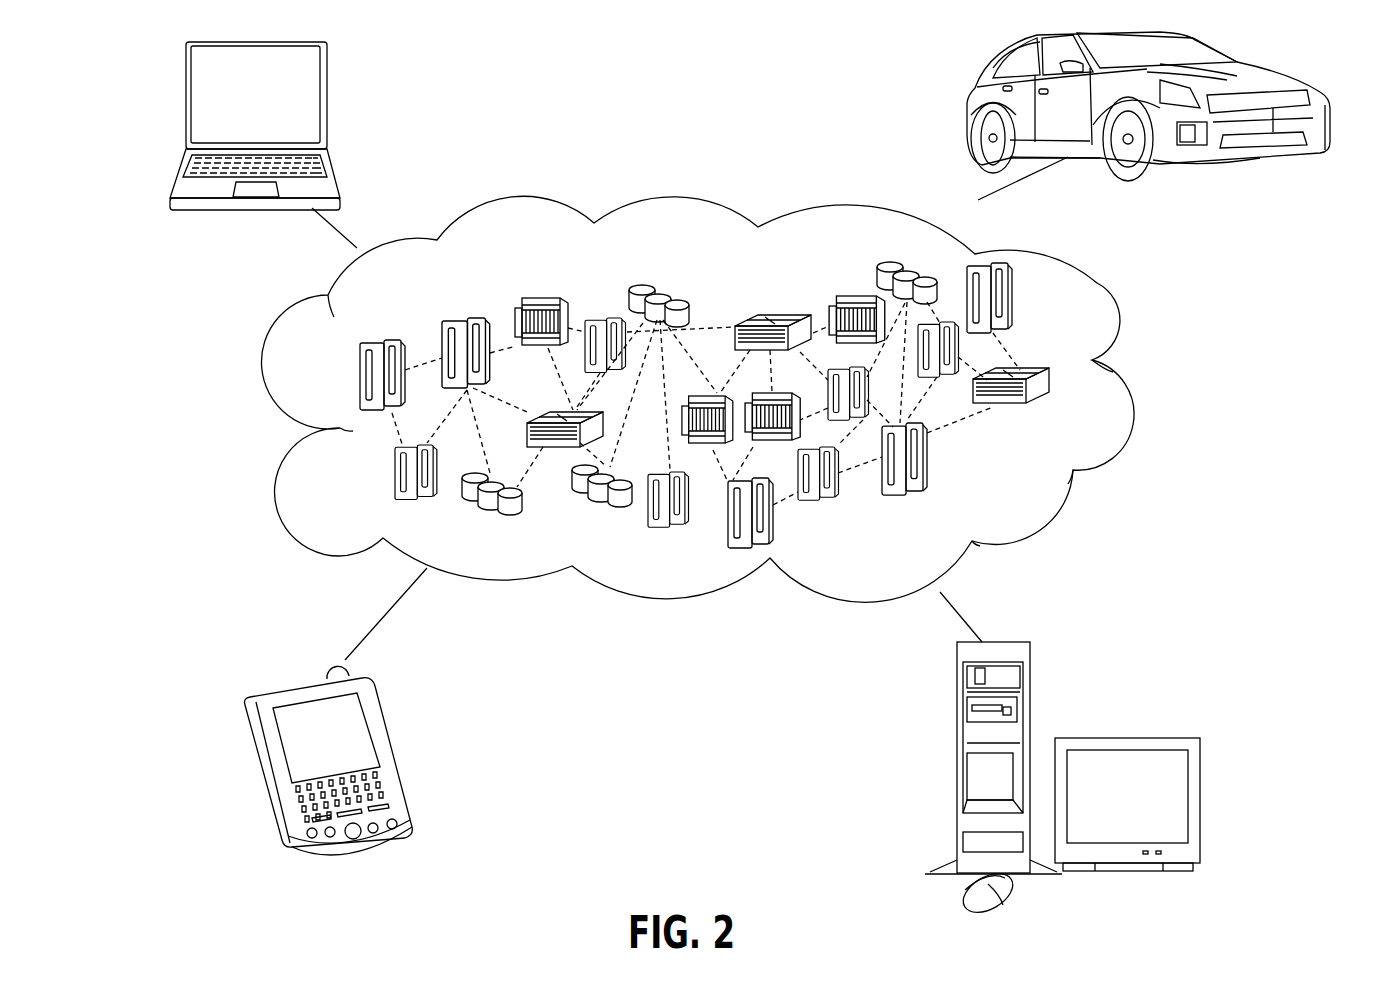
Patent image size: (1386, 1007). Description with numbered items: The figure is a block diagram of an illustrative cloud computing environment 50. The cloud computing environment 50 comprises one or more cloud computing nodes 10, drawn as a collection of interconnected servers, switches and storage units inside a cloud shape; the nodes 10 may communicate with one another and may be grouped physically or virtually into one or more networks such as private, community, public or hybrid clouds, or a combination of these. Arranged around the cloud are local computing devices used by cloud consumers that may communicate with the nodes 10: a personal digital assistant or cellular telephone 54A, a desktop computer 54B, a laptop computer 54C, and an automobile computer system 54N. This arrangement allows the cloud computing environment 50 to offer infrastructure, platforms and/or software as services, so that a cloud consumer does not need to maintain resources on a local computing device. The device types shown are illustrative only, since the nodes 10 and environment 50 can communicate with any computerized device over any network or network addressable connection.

The cloud computing nodes 10 is at (732, 399).
The cloud computing environment 50 is at (1118, 385).
The personal digital assistant or cellular telephone 54A is at (380, 717).
The desktop computer 54B is at (955, 702).
The laptop computer 54C is at (327, 78).
The automobile computer system 54N is at (968, 97).